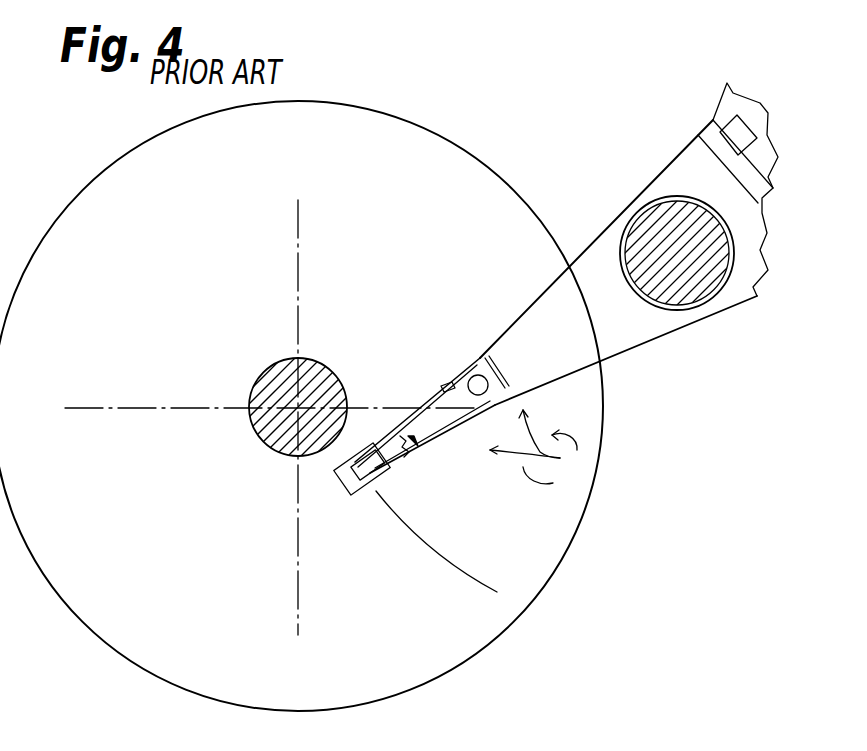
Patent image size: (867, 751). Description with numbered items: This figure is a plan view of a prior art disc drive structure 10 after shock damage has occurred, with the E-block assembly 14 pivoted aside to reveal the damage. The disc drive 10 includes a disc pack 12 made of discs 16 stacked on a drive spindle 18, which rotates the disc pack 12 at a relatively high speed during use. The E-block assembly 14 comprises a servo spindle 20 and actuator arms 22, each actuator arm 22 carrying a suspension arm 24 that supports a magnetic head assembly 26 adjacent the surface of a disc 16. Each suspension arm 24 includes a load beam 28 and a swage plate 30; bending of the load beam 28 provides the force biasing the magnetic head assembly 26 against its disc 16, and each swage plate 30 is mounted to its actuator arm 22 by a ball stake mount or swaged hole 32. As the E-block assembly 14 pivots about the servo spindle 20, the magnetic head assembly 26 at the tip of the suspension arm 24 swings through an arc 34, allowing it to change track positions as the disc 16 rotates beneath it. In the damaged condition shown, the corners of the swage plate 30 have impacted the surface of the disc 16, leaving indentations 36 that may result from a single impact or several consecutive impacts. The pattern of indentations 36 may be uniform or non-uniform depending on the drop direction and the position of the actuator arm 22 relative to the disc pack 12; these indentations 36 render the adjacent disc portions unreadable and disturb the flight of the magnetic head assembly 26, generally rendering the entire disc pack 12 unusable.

The disc drive structure 10 is at (505, 80).
The disc pack 12 is at (80, 189).
The E-block assembly 14 is at (652, 182).
The disc 16 is at (485, 180).
The drive spindle 18 is at (305, 373).
The servo spindle 20 is at (675, 213).
The actuator arm 22 is at (626, 336).
The suspension arm 24 is at (413, 450).
The magnetic head assembly 26 is at (345, 483).
The load beam 28 is at (450, 418).
The swage plate 30 is at (490, 405).
The swaged hole 32 is at (497, 372).
The arc 34 is at (433, 547).
The indentations 36 is at (539, 454).